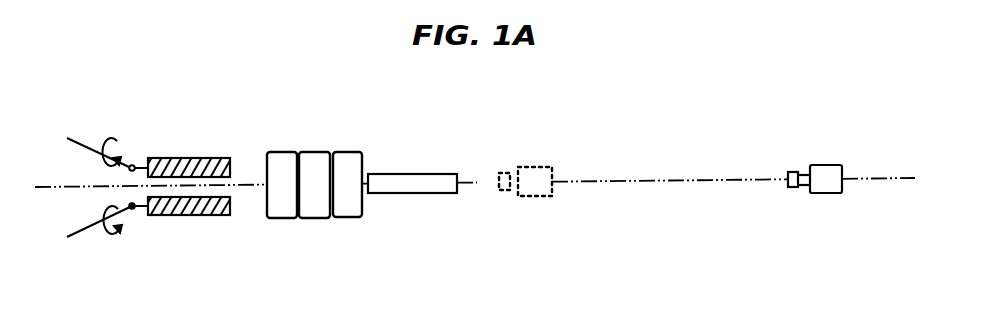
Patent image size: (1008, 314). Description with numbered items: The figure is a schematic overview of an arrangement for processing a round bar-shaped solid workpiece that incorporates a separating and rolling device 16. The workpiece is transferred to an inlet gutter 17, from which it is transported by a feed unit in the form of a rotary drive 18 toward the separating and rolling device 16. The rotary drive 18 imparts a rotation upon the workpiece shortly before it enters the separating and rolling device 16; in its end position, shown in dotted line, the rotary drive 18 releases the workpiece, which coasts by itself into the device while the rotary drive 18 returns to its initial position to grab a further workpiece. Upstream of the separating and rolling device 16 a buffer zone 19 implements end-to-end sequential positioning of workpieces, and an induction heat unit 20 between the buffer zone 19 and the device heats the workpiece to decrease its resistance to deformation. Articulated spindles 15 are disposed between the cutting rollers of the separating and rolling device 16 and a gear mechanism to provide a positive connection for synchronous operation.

The articulated spindles 15 is at (84, 143).
The separating and rolling device 16 is at (192, 158).
The inlet gutter 17 is at (638, 182).
The rotary drive 18 is at (537, 168).
The buffer zone 19 is at (410, 174).
The induction heat unit 20 is at (313, 152).